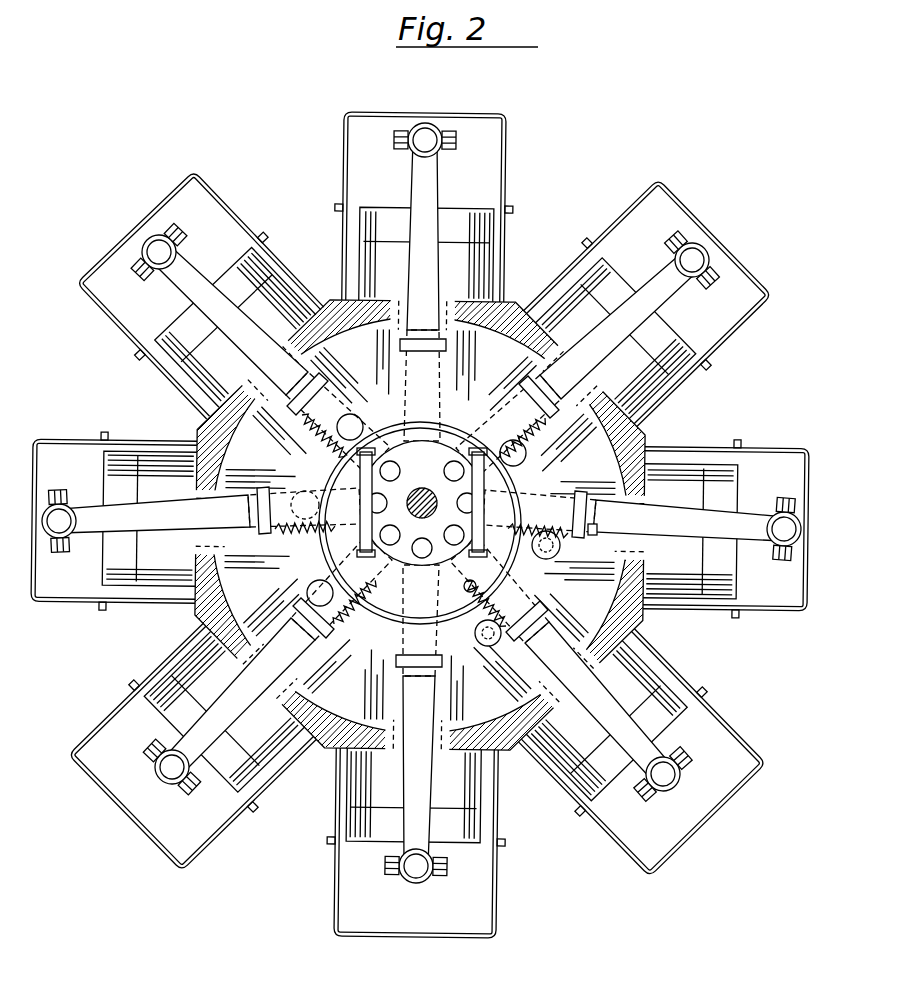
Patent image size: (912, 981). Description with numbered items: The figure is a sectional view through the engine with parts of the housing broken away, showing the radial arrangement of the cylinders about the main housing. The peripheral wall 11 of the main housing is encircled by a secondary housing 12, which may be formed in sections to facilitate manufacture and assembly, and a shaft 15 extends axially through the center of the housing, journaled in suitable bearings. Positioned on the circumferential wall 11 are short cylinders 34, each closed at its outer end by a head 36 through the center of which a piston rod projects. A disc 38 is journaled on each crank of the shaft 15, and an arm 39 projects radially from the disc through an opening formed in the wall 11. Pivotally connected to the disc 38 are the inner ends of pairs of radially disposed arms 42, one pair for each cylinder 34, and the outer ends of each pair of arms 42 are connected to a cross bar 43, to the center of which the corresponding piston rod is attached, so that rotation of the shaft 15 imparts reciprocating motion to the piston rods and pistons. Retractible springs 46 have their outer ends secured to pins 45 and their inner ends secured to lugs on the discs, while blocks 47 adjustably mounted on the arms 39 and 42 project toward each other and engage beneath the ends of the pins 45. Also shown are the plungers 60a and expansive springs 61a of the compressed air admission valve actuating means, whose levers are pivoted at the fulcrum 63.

The peripheral wall 11 is at (640, 620).
The secondary housing 12 is at (505, 150).
The shaft 15 is at (492, 485).
The short cylinder 34 is at (474, 256).
The head 36 is at (470, 223).
The disc 38 is at (440, 455).
The arm 39 is at (430, 290).
The radially disposed arms 42 is at (415, 175).
The cross bar 43 is at (427, 133).
The pins 45 is at (592, 535).
The retractible springs 46 is at (292, 530).
The blocks 47 is at (530, 393).
The plungers 60a is at (560, 549).
The expansive springs 61a is at (486, 631).
The pivot pin 63 is at (468, 589).